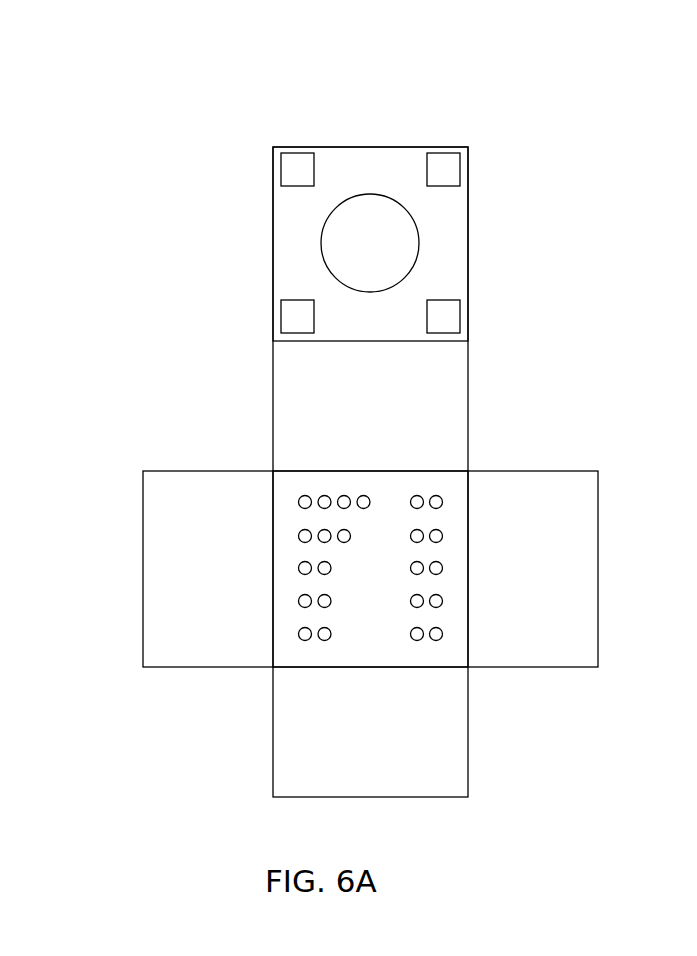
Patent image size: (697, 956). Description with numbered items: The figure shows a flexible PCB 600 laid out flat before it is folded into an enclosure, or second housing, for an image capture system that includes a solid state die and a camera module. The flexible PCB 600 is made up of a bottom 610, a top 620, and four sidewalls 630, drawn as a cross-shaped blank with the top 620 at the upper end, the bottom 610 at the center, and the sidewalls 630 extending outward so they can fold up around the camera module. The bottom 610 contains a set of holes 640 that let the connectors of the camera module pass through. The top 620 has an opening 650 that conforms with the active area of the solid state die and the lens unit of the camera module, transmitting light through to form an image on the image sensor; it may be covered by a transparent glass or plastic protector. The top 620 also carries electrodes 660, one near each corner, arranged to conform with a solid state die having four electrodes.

The flexible PCB 600 is at (175, 137).
The bottom 610 is at (443, 483).
The top 620 is at (450, 277).
The sidewalls 630 is at (290, 427).
The holes 640 is at (438, 634).
The opening 650 is at (368, 208).
The electrodes 660 is at (287, 165).